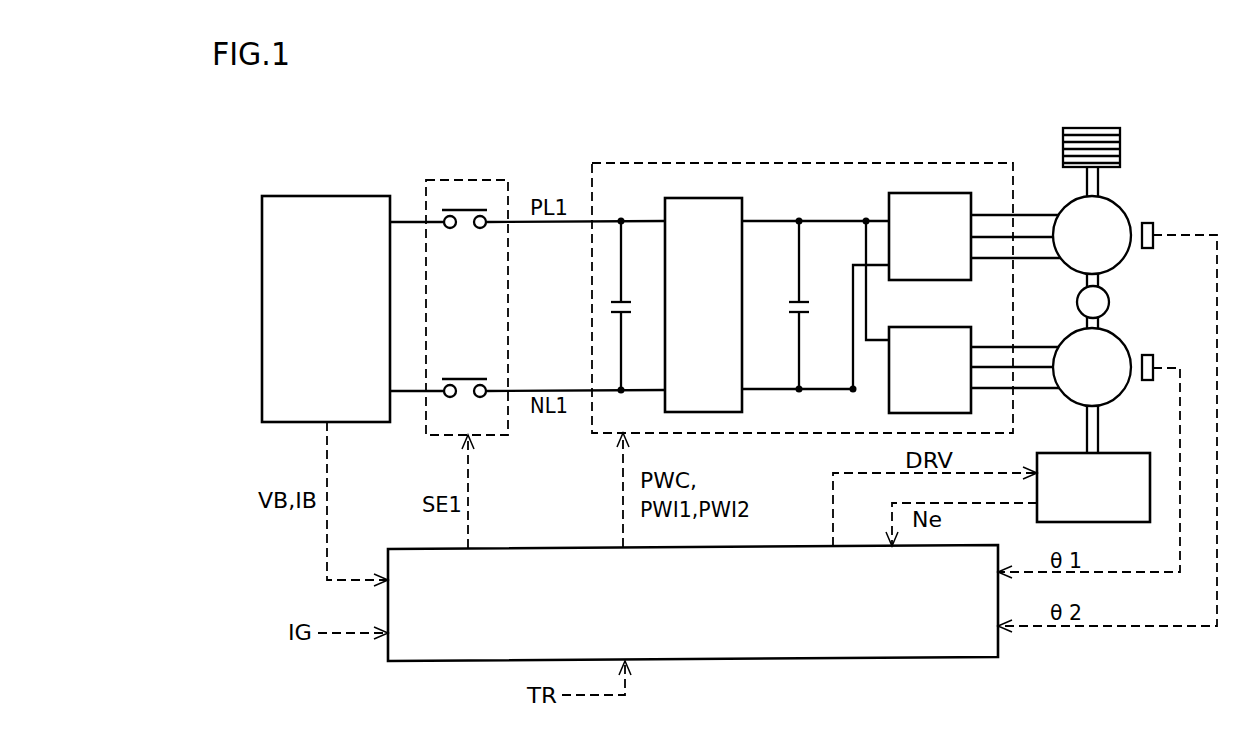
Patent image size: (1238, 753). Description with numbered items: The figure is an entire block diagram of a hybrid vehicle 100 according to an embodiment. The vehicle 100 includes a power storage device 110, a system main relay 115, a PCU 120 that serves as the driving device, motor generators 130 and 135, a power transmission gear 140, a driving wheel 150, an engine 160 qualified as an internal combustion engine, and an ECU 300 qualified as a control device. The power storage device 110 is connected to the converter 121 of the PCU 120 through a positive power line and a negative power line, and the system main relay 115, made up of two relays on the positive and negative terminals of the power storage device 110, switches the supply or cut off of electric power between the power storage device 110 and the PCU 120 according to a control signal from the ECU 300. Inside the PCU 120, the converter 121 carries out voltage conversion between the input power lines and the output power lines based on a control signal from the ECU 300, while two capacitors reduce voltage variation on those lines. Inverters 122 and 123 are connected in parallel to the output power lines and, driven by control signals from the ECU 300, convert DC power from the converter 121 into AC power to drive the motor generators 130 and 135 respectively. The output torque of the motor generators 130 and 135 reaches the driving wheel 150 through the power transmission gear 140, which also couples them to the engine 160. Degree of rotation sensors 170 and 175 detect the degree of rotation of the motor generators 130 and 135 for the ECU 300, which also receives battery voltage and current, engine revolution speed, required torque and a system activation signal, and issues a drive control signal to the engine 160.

The hybrid vehicle 100 is at (1145, 81).
The power storage device 110 is at (328, 196).
The system main relay 115 is at (501, 181).
The power control unit 120 is at (946, 164).
The converter 121 is at (678, 198).
The inverter 122 is at (928, 327).
The inverter 123 is at (928, 194).
The motor generator 130 is at (1119, 338).
The motor generator 135 is at (1119, 206).
The power transmission gear 140 is at (1109, 297).
The driving wheel 150 is at (1120, 144).
The engine 160 is at (1111, 453).
The degree of rotation sensor 170 is at (1153, 361).
The degree of rotation sensor 175 is at (1153, 229).
The ECU 300 is at (900, 658).